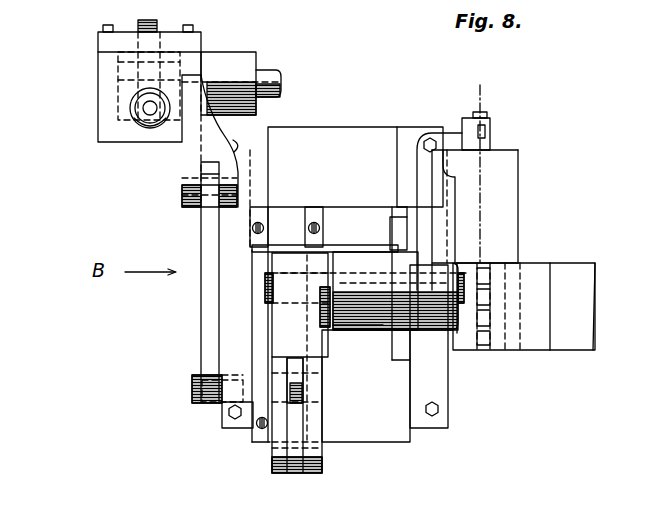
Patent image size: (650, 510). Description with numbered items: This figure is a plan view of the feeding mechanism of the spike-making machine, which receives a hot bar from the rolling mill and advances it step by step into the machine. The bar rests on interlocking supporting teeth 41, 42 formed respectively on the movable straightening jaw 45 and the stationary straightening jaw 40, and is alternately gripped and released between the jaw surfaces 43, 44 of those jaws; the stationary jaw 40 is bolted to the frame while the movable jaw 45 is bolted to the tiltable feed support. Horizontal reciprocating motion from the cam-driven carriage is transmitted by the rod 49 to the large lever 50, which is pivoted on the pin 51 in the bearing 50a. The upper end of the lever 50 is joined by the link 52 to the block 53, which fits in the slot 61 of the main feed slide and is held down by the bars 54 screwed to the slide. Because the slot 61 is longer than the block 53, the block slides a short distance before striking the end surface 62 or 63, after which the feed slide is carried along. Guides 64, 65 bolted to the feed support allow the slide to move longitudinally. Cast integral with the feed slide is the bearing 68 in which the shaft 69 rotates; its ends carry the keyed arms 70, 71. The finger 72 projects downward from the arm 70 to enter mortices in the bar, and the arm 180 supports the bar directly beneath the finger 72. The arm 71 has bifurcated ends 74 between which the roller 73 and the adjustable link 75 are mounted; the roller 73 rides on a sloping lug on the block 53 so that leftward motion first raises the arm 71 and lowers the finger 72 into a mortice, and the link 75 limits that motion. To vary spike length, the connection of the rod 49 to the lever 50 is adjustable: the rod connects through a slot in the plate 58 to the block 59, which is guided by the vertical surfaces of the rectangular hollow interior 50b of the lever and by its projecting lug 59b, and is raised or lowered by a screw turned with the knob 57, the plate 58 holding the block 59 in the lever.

The stationary straightening jaw 40 is at (537, 338).
The supporting teeth 41 is at (467, 333).
The supporting teeth 42 is at (490, 293).
The jaw surface 43 is at (510, 332).
The jaw surface 44 is at (475, 335).
The movable straightening jaw 45 is at (468, 262).
The rod 49 is at (157, 20).
The large lever 50 is at (245, 55).
The bearing 50a is at (168, 142).
The rectangular hollow interior 50b is at (112, 78).
The pin 51 is at (277, 72).
The link 52 is at (208, 302).
The block 53 is at (228, 335).
The bars 54 is at (250, 222).
The knob 57 is at (150, 128).
The plate 58 is at (118, 42).
The block 59 is at (118, 102).
The projecting lug 59b is at (165, 128).
The slot 61 is at (218, 248).
The end surface 62 is at (278, 250).
The end surface 63 is at (240, 430).
The guide 64 is at (416, 130).
The guide 65 is at (257, 133).
The bearing 68 is at (382, 322).
The shaft 69 is at (467, 277).
The arm 70 is at (452, 230).
The arm 71 is at (290, 343).
The finger 72 is at (486, 135).
The roller 73 is at (313, 380).
The bifurcated ends 74 is at (313, 418).
The link 75 is at (297, 470).
The arm 180 is at (453, 133).